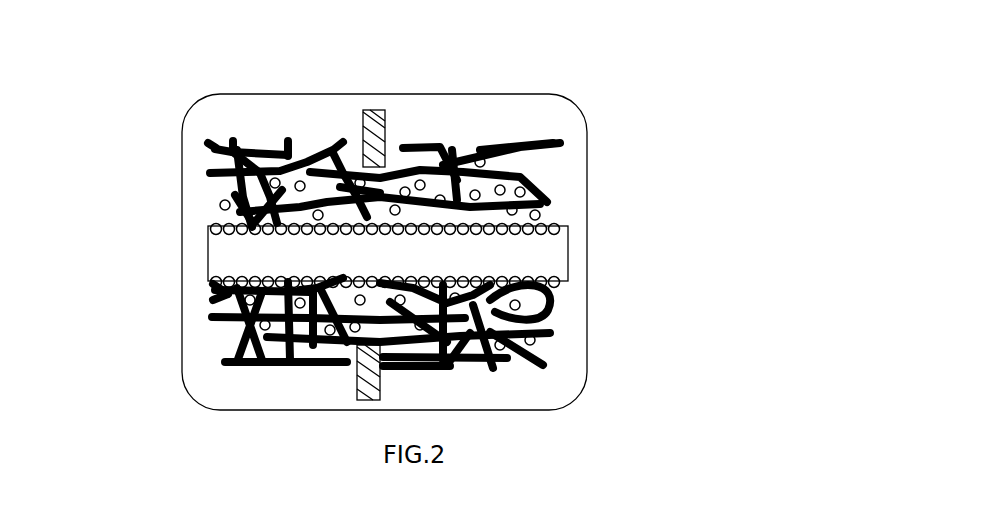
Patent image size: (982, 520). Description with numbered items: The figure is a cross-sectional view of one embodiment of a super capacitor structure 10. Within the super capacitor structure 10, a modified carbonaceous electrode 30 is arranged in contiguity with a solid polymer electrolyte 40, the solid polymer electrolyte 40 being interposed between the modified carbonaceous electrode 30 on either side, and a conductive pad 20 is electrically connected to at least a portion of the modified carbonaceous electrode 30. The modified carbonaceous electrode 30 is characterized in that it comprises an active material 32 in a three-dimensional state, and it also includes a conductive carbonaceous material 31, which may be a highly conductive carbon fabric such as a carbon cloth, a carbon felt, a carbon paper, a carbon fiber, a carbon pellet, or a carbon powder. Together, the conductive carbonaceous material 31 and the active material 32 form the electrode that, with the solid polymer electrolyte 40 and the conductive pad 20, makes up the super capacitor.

The super capacitor structure 10 is at (157, 103).
The conductive pad 20 is at (387, 140).
The modified carbonaceous electrode 30 is at (665, 52).
The conductive carbonaceous material 31 is at (530, 200).
The active material 32 is at (513, 180).
The solid polymer electrolyte 40 is at (568, 238).